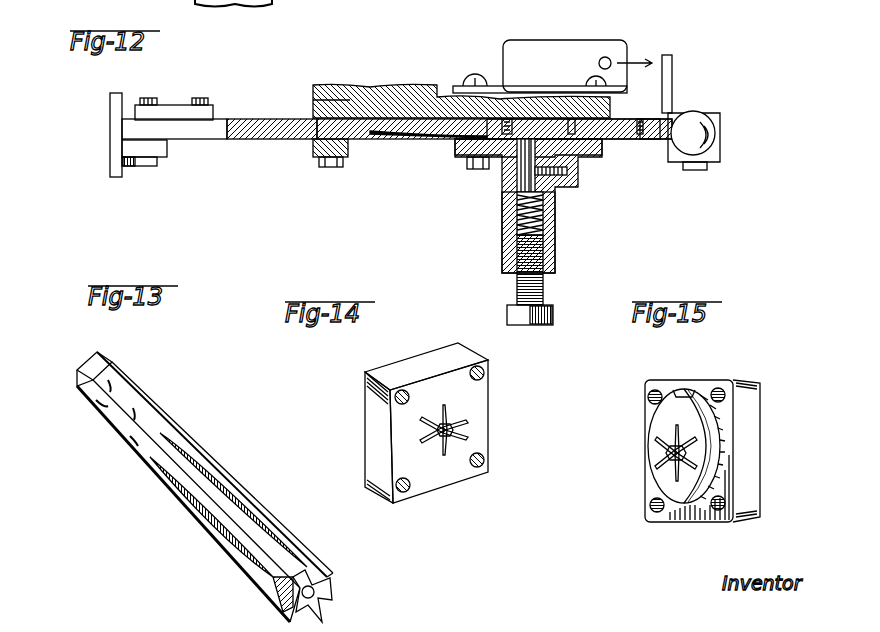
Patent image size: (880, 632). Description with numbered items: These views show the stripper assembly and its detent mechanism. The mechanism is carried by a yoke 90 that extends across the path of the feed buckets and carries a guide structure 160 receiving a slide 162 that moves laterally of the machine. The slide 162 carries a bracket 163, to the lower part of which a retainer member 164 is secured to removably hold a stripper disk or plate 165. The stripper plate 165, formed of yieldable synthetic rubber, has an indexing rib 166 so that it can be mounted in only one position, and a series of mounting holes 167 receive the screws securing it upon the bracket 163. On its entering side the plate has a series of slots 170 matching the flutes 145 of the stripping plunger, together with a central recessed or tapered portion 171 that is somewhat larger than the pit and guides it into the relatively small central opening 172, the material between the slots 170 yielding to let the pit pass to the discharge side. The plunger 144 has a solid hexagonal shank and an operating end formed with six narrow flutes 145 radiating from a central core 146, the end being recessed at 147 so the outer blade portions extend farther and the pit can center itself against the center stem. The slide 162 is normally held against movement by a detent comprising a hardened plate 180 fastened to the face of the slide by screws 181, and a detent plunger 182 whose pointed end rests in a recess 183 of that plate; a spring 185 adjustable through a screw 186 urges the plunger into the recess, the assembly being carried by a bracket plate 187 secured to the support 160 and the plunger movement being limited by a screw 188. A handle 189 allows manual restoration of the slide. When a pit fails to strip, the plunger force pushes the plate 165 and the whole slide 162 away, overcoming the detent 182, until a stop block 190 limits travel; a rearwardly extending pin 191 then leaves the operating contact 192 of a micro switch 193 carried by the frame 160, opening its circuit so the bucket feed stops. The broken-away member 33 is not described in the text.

In FIG. 12, the mounting member 33 is at (428, 2).
In FIG. 12, the yoke 90 is at (341, 85).
In FIG. 12, the guide structure 160 is at (316, 104).
In FIG. 12, the slide 162 is at (254, 140).
In FIG. 12, the bracket 163 is at (110, 158).
In FIG. 12, the retainer member 164 is at (130, 164).
In FIG. 14, the stripper plate 165 is at (372, 405).
In FIG. 15, the stripper plate 165 is at (748, 388).
In FIG. 15, the indexing rib 166 is at (682, 396).
In FIG. 14, the mounting holes 167 is at (484, 378).
In FIG. 15, the mounting holes 167 is at (650, 507).
In FIG. 14, the slots 170 is at (430, 445).
In FIG. 15, the slots 170 is at (665, 460).
In FIG. 15, the central recessed or tapered portion 171 is at (668, 453).
In FIG. 14, the central opening 172 is at (452, 428).
In FIG. 12, the hardened plate 180 is at (623, 139).
In FIG. 12, the screws 181 is at (645, 139).
In FIG. 12, the detent plunger 182 is at (519, 170).
In FIG. 12, the recess 183 is at (582, 152).
In FIG. 12, the spring 185 is at (545, 218).
In FIG. 12, the screw 186 is at (545, 287).
In FIG. 12, the bracket plate 187 is at (505, 255).
In FIG. 12, the screw 188 is at (570, 187).
In FIG. 12, the handle 189 is at (722, 124).
In FIG. 12, the stop block 190 is at (172, 105).
In FIG. 12, the pin 191 is at (672, 78).
In FIG. 12, the operating contact 192 is at (607, 58).
In FIG. 12, the micro switch 193 is at (632, 46).
In FIG. 13, the plunger 144 is at (167, 425).
In FIG. 13, the flutes 145 is at (263, 527).
In FIG. 13, the central core 146 is at (325, 592).
In FIG. 13, the recess 147 is at (275, 604).